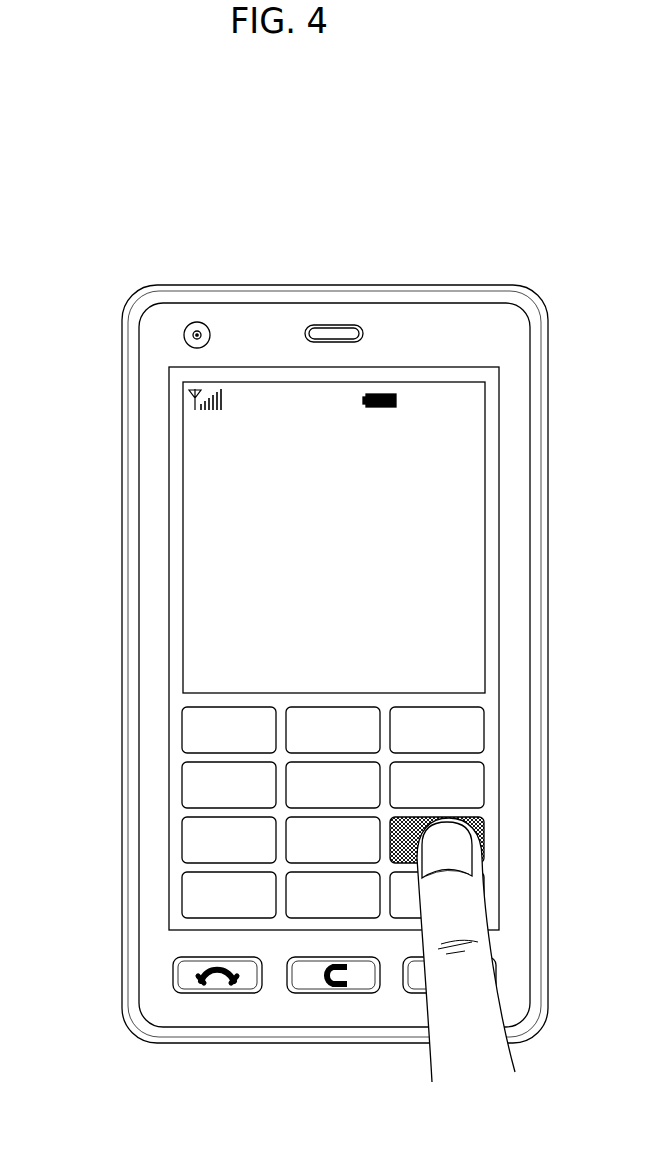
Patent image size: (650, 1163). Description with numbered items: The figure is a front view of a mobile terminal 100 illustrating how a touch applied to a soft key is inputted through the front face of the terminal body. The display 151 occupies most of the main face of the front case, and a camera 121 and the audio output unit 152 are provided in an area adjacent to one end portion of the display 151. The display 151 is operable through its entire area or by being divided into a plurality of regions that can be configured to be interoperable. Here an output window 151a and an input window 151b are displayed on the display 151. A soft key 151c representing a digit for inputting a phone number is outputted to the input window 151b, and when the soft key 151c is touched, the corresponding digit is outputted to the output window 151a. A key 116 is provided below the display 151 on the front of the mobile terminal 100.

The mobile terminal 100 is at (100, 286).
The camera 121 is at (197, 322).
The audio output module (speaker) 152 is at (333, 325).
The display 151 is at (162, 510).
The output window 151a is at (193, 600).
The soft key 151c is at (192, 735).
The input window 151b is at (177, 845).
The call key (user input unit) 116 is at (219, 982).